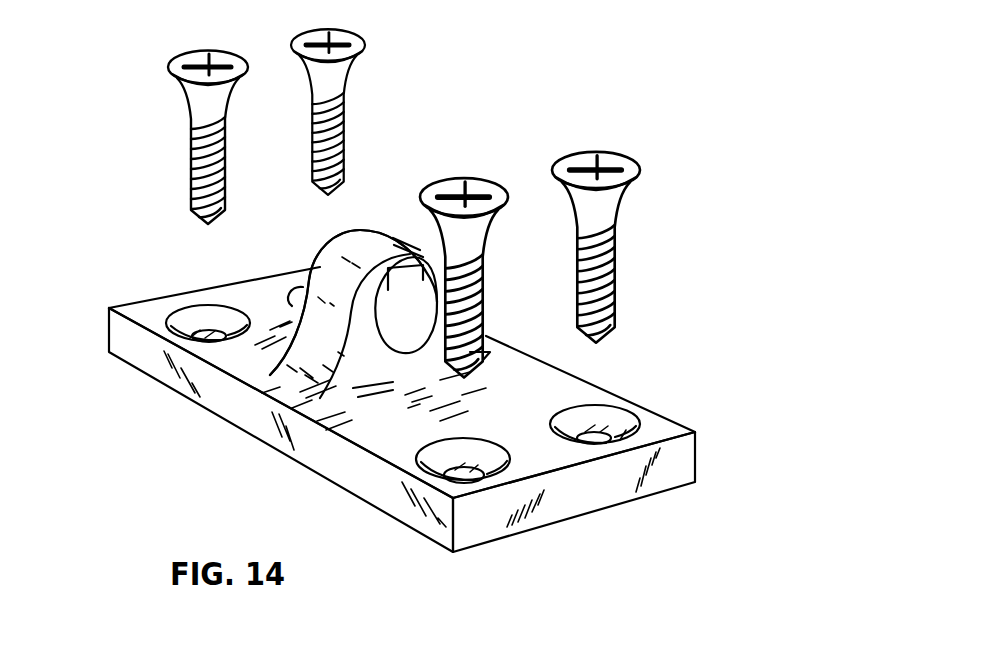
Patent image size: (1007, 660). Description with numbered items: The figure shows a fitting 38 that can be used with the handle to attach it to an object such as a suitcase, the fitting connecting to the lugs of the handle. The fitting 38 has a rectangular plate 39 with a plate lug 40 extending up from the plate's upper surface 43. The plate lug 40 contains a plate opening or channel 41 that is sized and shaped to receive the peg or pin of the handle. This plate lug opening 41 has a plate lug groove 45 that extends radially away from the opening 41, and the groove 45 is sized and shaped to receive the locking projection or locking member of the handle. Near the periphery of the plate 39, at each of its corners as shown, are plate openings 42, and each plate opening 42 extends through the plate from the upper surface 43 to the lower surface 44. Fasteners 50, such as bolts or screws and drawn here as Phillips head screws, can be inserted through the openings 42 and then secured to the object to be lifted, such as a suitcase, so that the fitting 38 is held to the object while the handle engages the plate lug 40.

The fitting 38 is at (704, 194).
The rectangular plate 39 is at (700, 475).
The plate lug 40 is at (333, 234).
The plate opening or channel 41 is at (406, 311).
The plate openings 42 is at (320, 267).
The upper surface 43 is at (678, 421).
The lower surface 44 is at (442, 547).
The plate lug groove 45 is at (397, 270).
The fasteners 50 is at (170, 62).